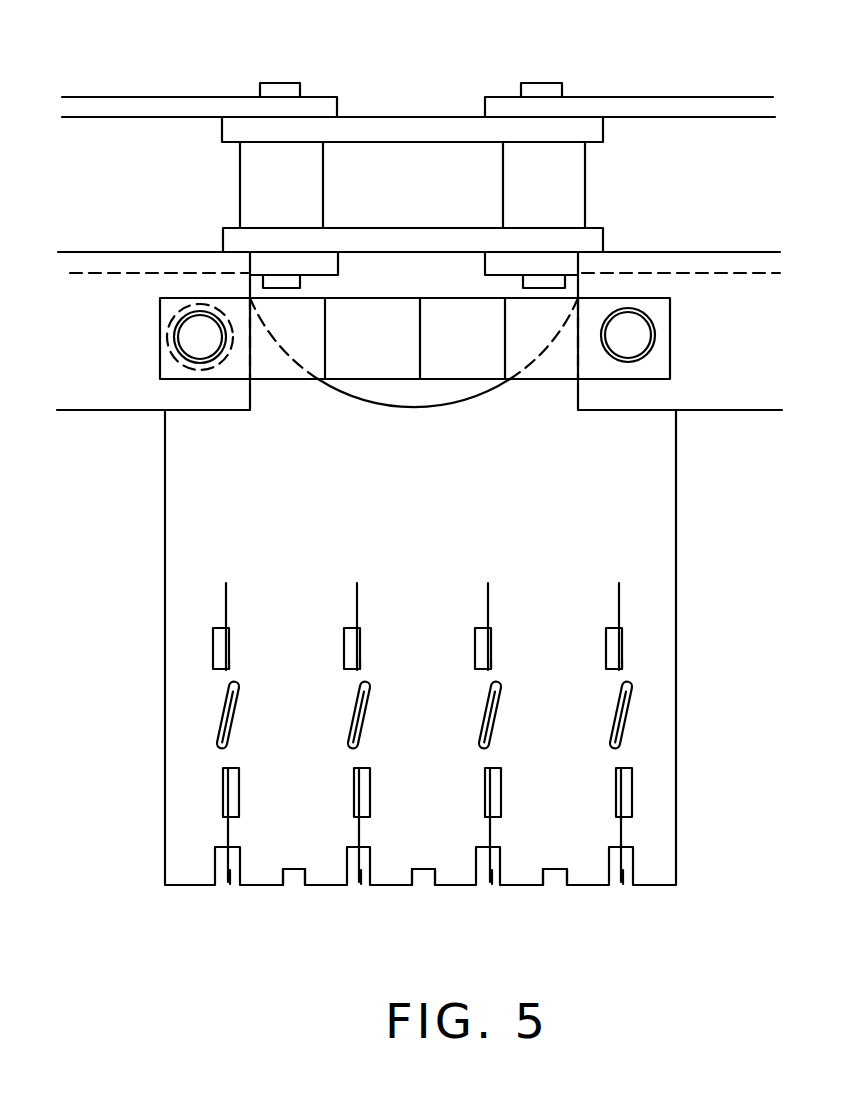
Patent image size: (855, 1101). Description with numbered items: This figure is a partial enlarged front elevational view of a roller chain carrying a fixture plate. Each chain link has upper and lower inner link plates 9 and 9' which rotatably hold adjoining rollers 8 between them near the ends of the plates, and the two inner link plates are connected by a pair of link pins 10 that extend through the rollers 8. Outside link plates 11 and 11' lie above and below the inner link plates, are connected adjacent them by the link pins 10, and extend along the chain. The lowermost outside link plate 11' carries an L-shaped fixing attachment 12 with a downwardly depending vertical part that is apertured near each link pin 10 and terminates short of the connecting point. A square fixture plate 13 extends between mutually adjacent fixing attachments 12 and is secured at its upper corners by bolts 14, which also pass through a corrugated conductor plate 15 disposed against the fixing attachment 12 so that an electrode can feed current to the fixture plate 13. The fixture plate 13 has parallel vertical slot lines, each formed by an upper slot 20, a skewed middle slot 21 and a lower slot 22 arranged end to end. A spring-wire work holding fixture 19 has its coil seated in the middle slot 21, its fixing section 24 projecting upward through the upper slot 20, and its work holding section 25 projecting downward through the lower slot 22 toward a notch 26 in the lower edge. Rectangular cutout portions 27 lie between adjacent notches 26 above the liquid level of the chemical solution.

The roller 8 is at (325, 196).
The upper inner link plate 9 is at (412, 98).
The lower inner link plate 9' is at (413, 215).
The link pin 10 is at (278, 87).
The outside link plate 11 is at (418, 62).
The lowermost outside link plate 11' is at (425, 275).
The fixing attachment 12 is at (117, 412).
The fixture plate 13 is at (658, 612).
The bolt 14 is at (174, 340).
The corrugated conductor plate 15 is at (448, 360).
The work holding fixture 19 is at (698, 648).
The upper slot 20 is at (626, 657).
The middle slot 21 is at (630, 703).
The lower slot 22 is at (634, 805).
The fixing section 24 is at (620, 582).
The work holding section 25 is at (626, 835).
The notch 26 is at (240, 886).
The rectangular cutout portion 27 is at (295, 875).